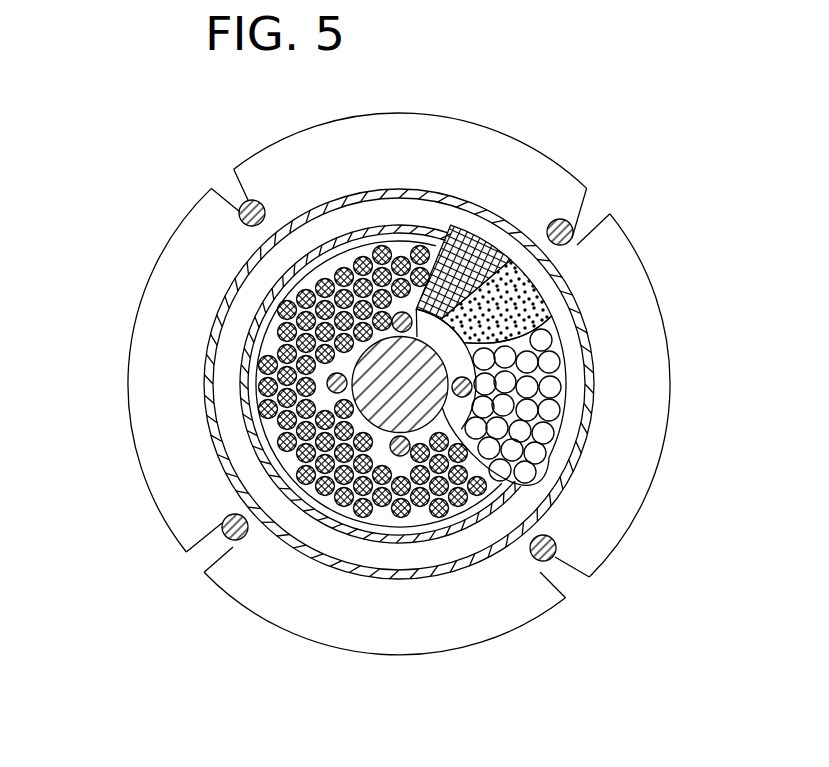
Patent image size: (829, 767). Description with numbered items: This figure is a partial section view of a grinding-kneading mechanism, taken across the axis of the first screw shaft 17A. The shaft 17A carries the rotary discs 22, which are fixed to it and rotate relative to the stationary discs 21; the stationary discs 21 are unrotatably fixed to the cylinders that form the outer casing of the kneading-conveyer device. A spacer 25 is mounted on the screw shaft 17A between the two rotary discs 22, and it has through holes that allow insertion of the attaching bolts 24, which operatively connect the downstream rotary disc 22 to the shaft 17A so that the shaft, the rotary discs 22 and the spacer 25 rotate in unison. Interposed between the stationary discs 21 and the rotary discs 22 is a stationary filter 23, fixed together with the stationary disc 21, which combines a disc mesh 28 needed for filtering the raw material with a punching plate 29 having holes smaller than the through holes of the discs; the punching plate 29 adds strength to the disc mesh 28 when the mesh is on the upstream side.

The first screw shaft 17A is at (370, 357).
The stationary disc 21 is at (565, 372).
The rotary disc 22 is at (264, 350).
The stationary filter 23 is at (569, 247).
The attaching bolt 24 is at (463, 410).
The spacer 25 is at (473, 385).
The disc mesh 28 is at (475, 250).
The punching plate 29 is at (530, 297).